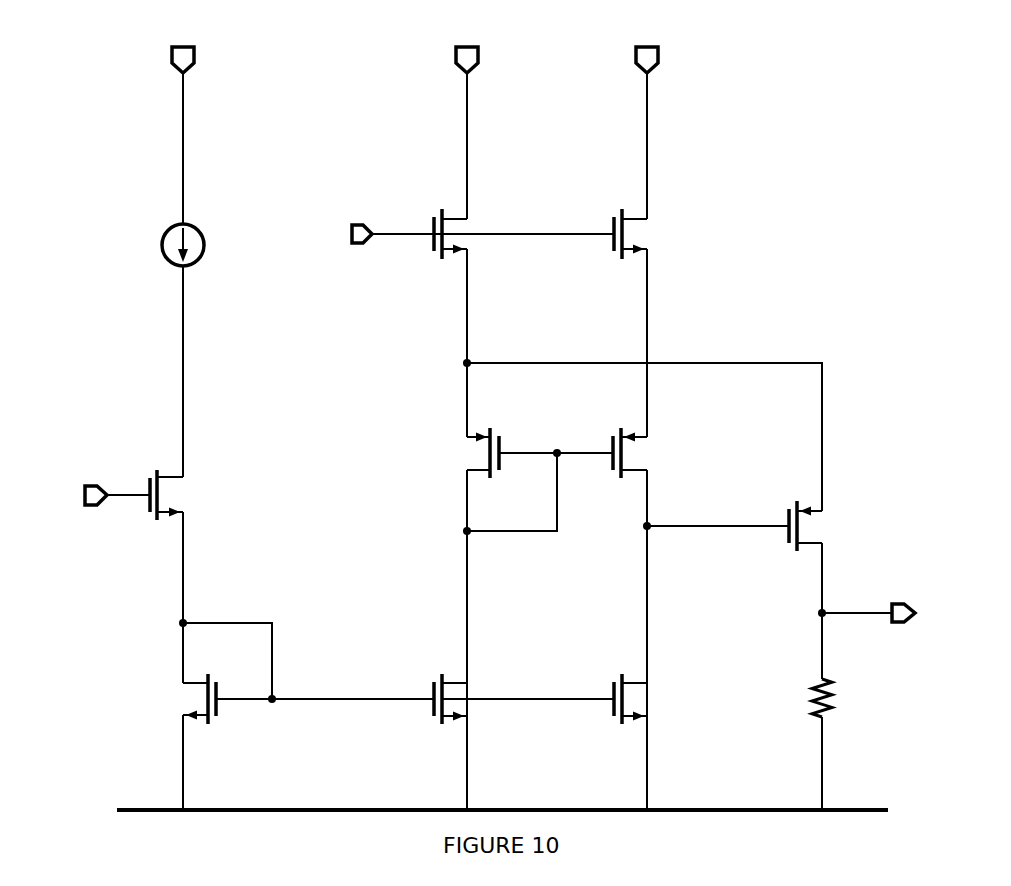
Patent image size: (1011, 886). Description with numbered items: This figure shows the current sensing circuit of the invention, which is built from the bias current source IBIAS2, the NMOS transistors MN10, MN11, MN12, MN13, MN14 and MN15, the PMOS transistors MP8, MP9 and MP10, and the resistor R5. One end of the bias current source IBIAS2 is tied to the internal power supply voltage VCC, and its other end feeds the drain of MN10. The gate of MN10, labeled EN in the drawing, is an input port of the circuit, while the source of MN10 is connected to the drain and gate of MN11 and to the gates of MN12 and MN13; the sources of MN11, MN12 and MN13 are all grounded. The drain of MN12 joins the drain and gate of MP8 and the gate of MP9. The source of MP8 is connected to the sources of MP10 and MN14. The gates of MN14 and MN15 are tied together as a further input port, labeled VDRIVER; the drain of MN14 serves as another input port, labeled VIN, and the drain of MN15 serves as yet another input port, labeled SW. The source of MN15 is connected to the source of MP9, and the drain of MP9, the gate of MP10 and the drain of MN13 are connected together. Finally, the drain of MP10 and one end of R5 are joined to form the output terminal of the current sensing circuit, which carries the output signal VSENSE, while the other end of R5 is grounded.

The internal power supply voltage VCC is at (184, 118).
The input voltage terminal VIN is at (468, 116).
The switch node terminal SW is at (648, 116).
The enable input EN is at (96, 498).
The driver voltage input VDRIVER is at (441, 234).
The output signal VSENSE is at (901, 614).
The bias current source IBIAS2 is at (155, 245).
The NMOS transistor MN10 is at (191, 393).
The NMOS transistor MN11 is at (308, 742).
The NMOS transistor MN12 is at (497, 742).
The NMOS transistor MN13 is at (604, 742).
The NMOS transistor MN14 is at (433, 323).
The NMOS transistor MN15 is at (613, 323).
The PMOS transistor MP8 is at (517, 555).
The PMOS transistor MP9 is at (648, 555).
The PMOS transistor MP10 is at (759, 590).
The resistor R5 is at (838, 744).